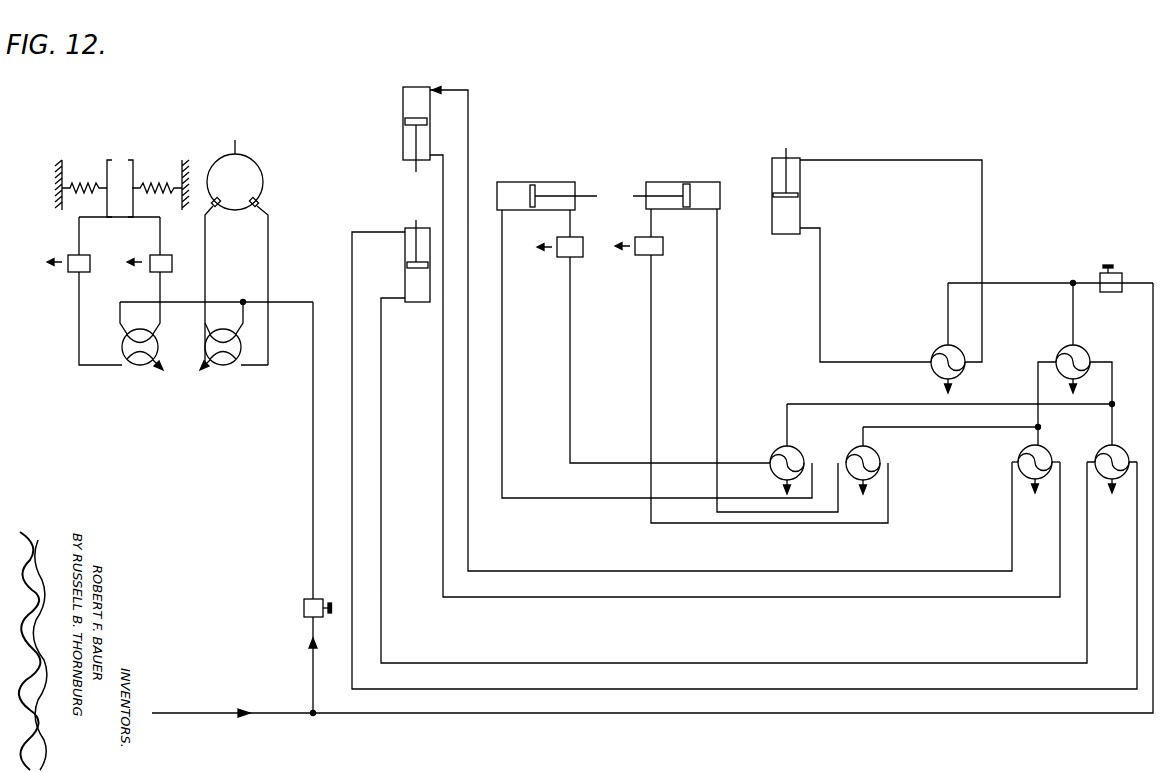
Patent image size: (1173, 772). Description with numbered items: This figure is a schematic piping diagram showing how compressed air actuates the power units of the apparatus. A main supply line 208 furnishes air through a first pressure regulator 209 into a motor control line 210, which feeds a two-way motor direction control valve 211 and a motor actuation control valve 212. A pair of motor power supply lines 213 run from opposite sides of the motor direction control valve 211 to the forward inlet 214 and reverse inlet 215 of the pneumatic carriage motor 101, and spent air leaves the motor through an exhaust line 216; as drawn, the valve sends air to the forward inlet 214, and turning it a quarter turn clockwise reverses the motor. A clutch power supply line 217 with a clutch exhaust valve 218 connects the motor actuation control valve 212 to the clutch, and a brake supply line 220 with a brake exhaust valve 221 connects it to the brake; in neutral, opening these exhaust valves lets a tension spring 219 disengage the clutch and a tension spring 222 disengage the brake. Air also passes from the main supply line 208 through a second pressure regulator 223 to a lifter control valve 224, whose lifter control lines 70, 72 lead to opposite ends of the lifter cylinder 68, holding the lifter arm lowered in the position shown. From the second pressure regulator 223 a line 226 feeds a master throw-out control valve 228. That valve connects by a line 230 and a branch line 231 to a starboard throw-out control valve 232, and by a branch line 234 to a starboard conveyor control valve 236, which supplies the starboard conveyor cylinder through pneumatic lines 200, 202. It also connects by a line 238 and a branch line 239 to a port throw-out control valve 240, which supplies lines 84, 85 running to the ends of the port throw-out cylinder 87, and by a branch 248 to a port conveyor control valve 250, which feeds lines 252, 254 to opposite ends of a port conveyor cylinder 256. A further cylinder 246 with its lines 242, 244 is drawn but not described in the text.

The carriage motor 101 is at (263, 176).
The exhaust line 216 is at (238, 144).
The forward inlet 214 is at (219, 207).
The reverse inlet 215 is at (259, 201).
The motor power supply lines 213 is at (205, 265).
The tension spring 219 is at (92, 181).
The tension spring 222 is at (160, 181).
The brake supply line 220 is at (160, 238).
The clutch power supply line 217 is at (79, 320).
The clutch exhaust valve 218 is at (90, 262).
The brake exhaust valve 221 is at (172, 262).
The motor actuation control valve 212 is at (136, 365).
The motor direction control valve 211 is at (223, 365).
The motor control line 210 is at (313, 546).
The first pressure regulator 209 is at (306, 600).
The main supply line 208 is at (206, 713).
The port conveyor cylinder 256 is at (403, 103).
The pneumatic line 200 is at (367, 232).
The pneumatic line 202 is at (1104, 624).
The cylinder 246 is at (525, 182).
The conduit 242 is at (502, 426).
The conduit 244 is at (570, 420).
The port throw-out cylinder 87 is at (697, 182).
The line 84 is at (652, 420).
The line 85 is at (718, 418).
The lifter cylinder 68 is at (772, 176).
The lifter control line 70 is at (848, 160).
The lifter control line 72 is at (818, 228).
The lifter control valve 224 is at (937, 352).
The second pressure regulator 223 is at (1116, 276).
The line 226 is at (1073, 312).
The master throw-out control valve 228 is at (1061, 352).
The line 230 is at (1112, 372).
The line 238 is at (1036, 388).
The branch line 231 is at (1073, 405).
The branch line 239 is at (956, 427).
The branch line 234 is at (1112, 432).
The branch 248 is at (1036, 428).
The starboard conveyor control valve 236 is at (1100, 480).
The line 252 is at (1012, 530).
The port conveyor control valve 250 is at (1052, 478).
The line 254 is at (1060, 586).
The starboard throw-out control valve 232 is at (778, 452).
The port throw-out control valve 240 is at (855, 450).